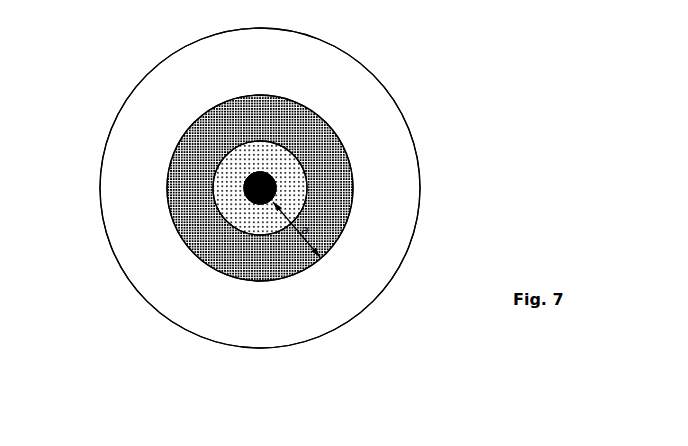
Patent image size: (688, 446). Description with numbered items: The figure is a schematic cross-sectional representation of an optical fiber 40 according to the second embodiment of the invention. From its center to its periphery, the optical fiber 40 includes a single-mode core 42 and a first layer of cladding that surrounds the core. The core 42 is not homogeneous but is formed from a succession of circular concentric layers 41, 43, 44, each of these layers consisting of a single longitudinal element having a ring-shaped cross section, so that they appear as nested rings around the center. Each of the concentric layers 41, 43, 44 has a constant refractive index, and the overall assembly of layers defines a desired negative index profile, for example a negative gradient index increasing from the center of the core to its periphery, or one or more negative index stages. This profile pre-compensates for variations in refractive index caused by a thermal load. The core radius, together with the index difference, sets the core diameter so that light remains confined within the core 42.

The optical fiber 40 is at (405, 77).
The circular concentric layer 41 is at (257, 170).
The single-mode core 42 is at (363, 180).
The circular concentric layer 43 is at (227, 180).
The circular concentric layer 44 is at (183, 215).